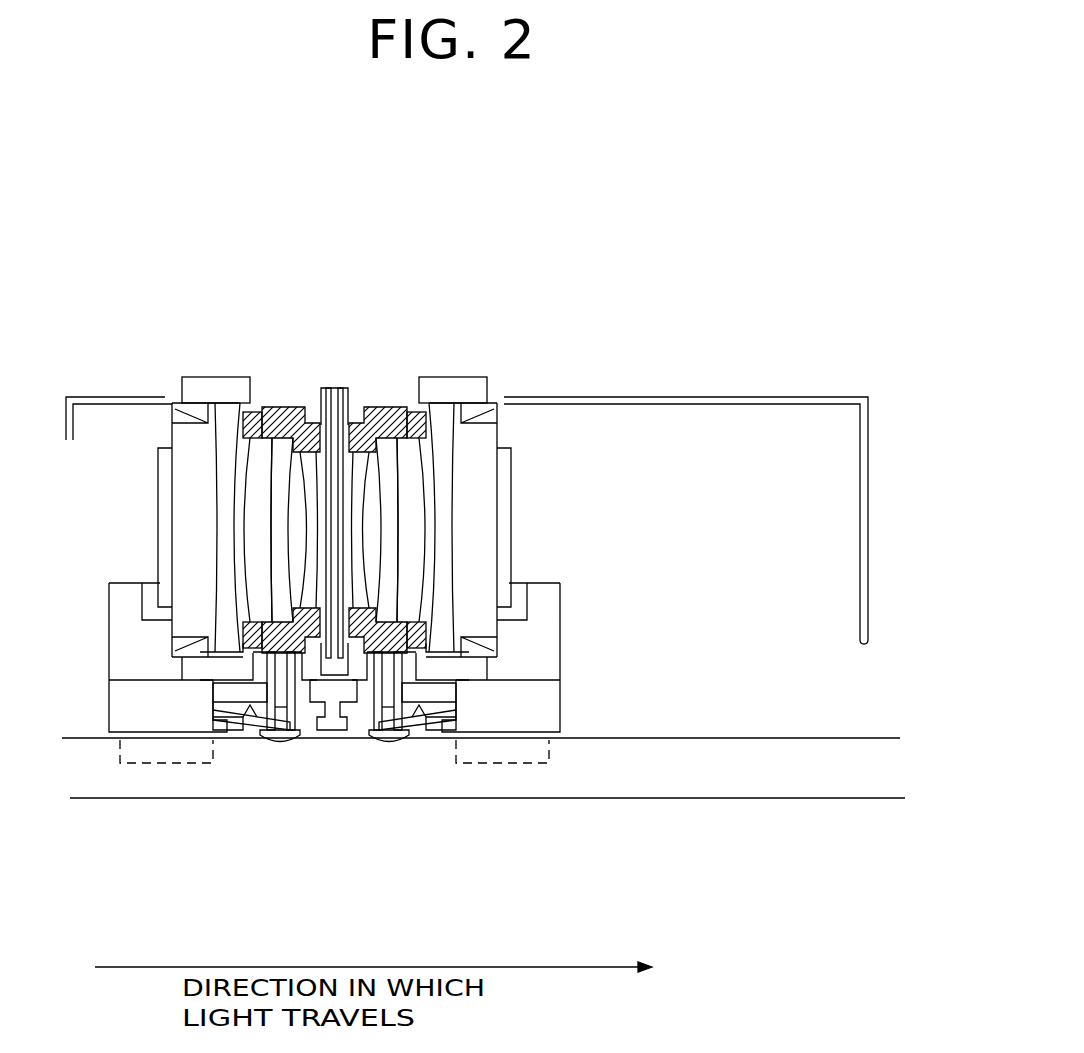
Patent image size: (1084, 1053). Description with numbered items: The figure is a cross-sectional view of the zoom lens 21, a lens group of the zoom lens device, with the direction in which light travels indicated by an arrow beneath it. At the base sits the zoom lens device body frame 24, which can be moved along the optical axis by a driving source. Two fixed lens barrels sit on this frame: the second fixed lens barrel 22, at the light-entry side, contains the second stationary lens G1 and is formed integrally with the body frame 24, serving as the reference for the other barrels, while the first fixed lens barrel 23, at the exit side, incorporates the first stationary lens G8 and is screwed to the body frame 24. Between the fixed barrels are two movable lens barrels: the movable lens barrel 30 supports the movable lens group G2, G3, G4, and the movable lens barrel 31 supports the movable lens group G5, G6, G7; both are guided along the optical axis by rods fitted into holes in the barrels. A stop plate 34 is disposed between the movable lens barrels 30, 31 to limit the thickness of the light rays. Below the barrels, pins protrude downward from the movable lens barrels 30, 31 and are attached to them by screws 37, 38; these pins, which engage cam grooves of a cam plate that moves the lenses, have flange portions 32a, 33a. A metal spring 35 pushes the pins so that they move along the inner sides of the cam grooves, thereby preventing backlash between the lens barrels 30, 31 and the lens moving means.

The zoom lens 21 is at (482, 260).
The second fixed lens barrel 22 is at (187, 383).
The first fixed lens barrel 23 is at (483, 377).
The zoom lens device body frame 24 is at (165, 720).
The movable lens barrel 30 is at (300, 407).
The movable lens barrel 31 is at (380, 400).
The flange portion 32a is at (312, 727).
The flange portion 33a is at (353, 723).
The stop plate 34 is at (336, 393).
The spring 35 is at (230, 717).
The screw 37 is at (280, 742).
The screw 38 is at (382, 733).
The second stationary lens G1 is at (220, 410).
The movable lens G2 is at (252, 482).
The movable lens G3 is at (275, 455).
The movable lens G4 is at (285, 462).
The movable lens G5 is at (357, 452).
The movable lens G6 is at (372, 425).
The movable lens G7 is at (428, 445).
The first stationary lens G8 is at (426, 482).